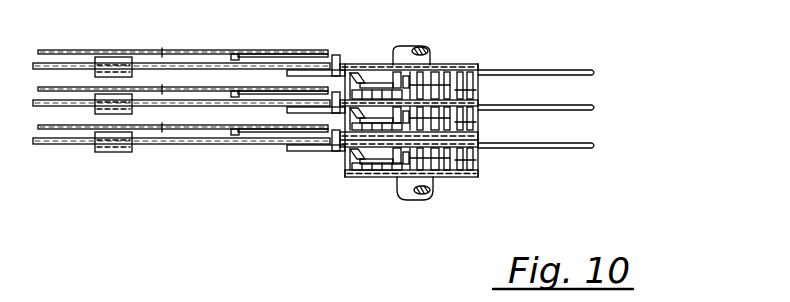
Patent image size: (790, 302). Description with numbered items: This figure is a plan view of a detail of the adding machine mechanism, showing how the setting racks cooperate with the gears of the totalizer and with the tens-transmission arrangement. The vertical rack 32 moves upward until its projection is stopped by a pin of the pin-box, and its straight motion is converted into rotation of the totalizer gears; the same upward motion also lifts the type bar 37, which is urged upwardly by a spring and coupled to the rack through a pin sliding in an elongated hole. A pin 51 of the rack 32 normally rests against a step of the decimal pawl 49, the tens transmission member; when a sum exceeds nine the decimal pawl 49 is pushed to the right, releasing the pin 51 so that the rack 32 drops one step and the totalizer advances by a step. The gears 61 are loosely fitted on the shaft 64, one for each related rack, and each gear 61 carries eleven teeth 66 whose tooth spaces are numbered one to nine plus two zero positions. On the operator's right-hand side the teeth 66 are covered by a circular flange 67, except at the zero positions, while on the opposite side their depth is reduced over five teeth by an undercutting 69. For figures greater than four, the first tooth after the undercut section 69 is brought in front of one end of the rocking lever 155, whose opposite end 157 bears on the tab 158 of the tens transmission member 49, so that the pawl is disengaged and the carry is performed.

The vertical rack 32 is at (145, 52).
The type bar 37 is at (233, 62).
The decimal pawl 49 is at (193, 70).
The pin 51 is at (103, 57).
The gear 61 is at (482, 88).
The shaft 64 is at (429, 50).
The teeth 66 is at (440, 76).
The circular flange 67 is at (455, 178).
The undercutting 69 is at (470, 83).
The rocking lever 155 is at (348, 160).
The opposite end of rocking lever 157 is at (384, 165).
The tab 158 is at (421, 186).